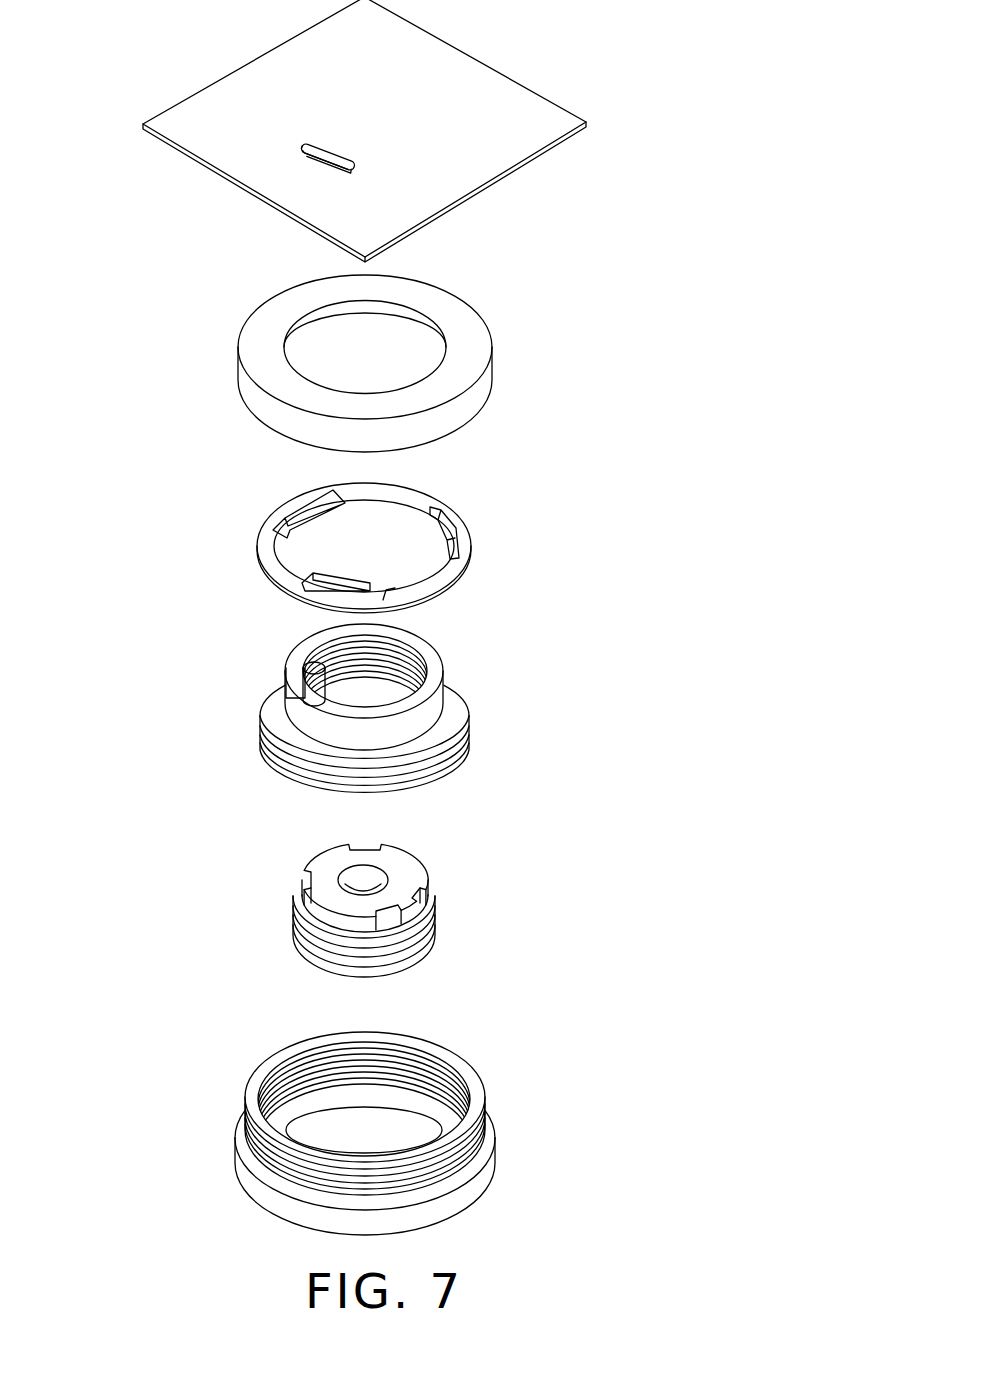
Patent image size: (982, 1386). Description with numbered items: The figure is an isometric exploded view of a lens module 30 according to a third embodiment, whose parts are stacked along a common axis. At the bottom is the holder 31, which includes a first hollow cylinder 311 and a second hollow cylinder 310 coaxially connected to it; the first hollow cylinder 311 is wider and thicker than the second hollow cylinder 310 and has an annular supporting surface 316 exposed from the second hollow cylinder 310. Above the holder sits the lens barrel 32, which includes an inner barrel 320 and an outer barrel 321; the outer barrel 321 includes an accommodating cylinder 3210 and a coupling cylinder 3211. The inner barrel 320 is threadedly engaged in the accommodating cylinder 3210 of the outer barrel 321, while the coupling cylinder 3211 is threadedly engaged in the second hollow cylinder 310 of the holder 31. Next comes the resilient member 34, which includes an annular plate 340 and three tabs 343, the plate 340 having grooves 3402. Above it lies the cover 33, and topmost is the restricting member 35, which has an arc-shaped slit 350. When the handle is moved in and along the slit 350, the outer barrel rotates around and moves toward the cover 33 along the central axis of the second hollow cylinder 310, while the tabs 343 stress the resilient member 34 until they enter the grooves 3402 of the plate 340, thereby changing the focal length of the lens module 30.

The lens module 30 is at (158, 50).
The restricting member 35 is at (375, 131).
The arc-shaped slit 350 is at (333, 147).
The cover 33 is at (470, 345).
The resilient member 34 is at (398, 544).
The annular plate 340 is at (433, 582).
The tab 343 is at (443, 522).
The groove 3402 is at (285, 530).
The lens barrel 32 is at (486, 800).
The outer barrel 321 is at (456, 708).
The accommodating cylinder 3210 is at (430, 662).
The coupling cylinder 3211 is at (470, 730).
The inner barrel 320 is at (469, 902).
The holder 31 is at (441, 1122).
The second hollow cylinder 310 is at (472, 1102).
The annular supporting surface 316 is at (405, 1100).
The first hollow cylinder 311 is at (475, 1187).